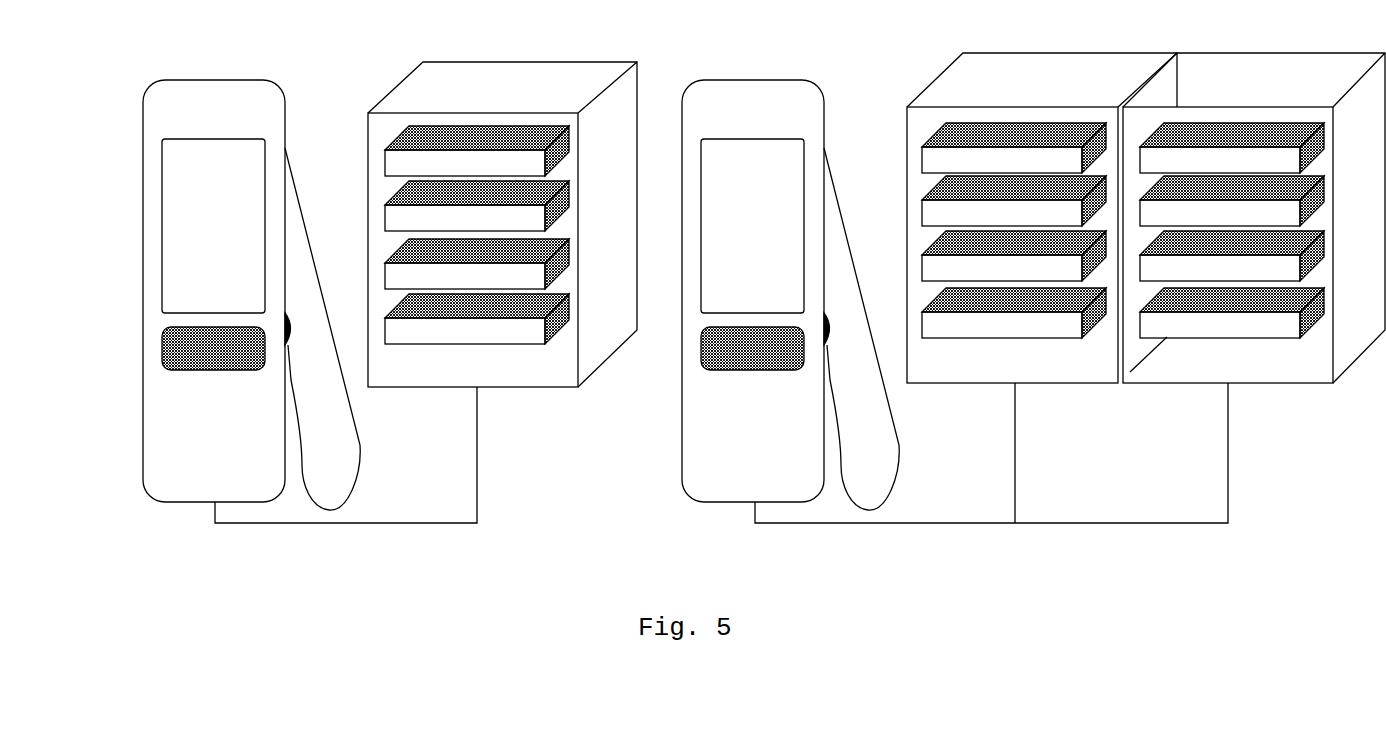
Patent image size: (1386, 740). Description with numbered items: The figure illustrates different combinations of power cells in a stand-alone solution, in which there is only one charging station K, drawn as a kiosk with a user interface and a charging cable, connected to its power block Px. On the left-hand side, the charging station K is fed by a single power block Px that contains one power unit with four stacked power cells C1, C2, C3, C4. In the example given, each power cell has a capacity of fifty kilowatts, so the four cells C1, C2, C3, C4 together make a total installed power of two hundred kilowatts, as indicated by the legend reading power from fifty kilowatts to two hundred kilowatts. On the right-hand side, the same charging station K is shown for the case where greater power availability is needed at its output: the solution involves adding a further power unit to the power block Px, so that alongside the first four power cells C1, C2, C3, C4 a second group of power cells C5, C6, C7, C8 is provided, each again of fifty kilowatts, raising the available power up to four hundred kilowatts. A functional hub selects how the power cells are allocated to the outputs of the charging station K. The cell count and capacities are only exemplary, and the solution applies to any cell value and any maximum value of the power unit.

The charging station K is at (521, 295).
The power block Px is at (876, 220).
The power cell C1 is at (745, 149).
The power cell C2 is at (745, 203).
The power cell C3 is at (745, 260).
The power cell C4 is at (745, 316).
The power cell C5 is at (1232, 148).
The power cell C6 is at (1232, 201).
The power cell C7 is at (1232, 256).
The power cell C8 is at (1232, 313).